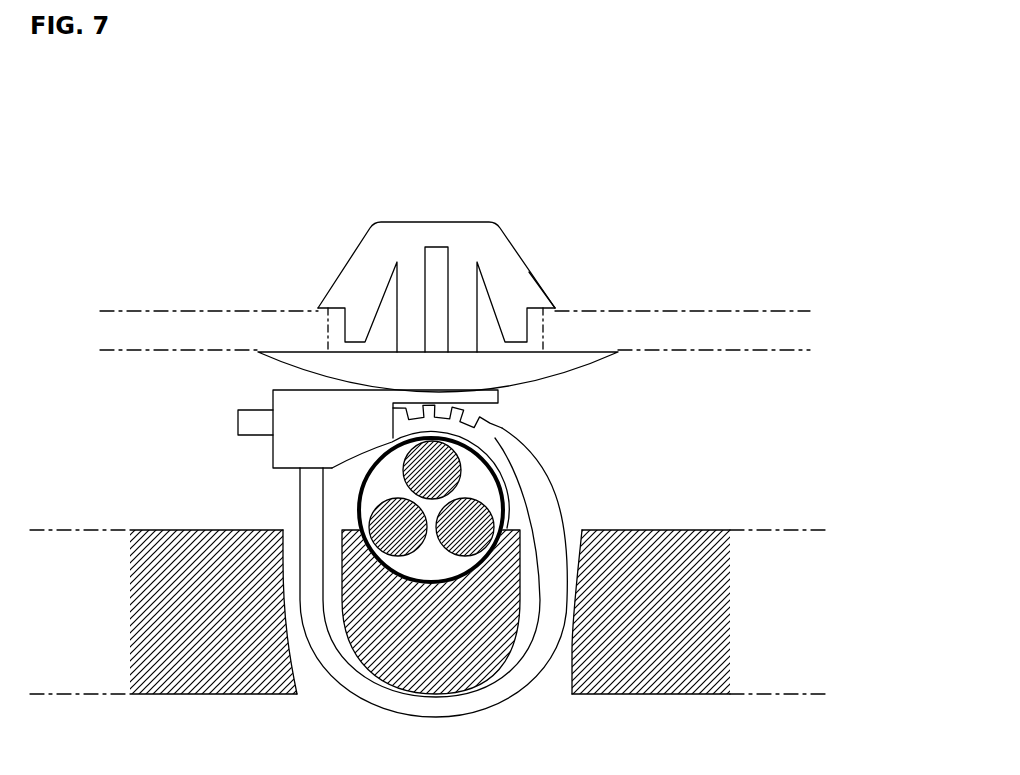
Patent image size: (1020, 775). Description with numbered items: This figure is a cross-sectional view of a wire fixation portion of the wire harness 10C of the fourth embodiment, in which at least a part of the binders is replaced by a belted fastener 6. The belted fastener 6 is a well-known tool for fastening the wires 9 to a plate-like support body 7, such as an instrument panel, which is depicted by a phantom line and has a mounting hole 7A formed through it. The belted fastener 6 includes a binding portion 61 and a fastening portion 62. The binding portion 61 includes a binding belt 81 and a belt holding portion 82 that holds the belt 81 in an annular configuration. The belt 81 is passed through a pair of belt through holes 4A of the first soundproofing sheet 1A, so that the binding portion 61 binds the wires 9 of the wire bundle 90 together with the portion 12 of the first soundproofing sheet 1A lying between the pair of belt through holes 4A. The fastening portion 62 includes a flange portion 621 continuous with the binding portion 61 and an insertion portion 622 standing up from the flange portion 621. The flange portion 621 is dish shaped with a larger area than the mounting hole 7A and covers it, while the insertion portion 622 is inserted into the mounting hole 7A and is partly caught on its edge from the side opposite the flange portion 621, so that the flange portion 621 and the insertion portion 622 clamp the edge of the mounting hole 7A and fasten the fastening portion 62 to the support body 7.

The wire harness 10C is at (233, 136).
The belted fastener 6 is at (530, 196).
The fastening portion 62 is at (564, 266).
The insertion portion 622 is at (558, 285).
The flange portion 621 is at (577, 372).
The binding portion 61 is at (595, 449).
The binding belt 81 is at (560, 507).
The belt holding portion 82 is at (273, 461).
The wire bundle 90 is at (514, 478).
The wires 9 is at (445, 506).
The portion between the pair of belt through holes 12 is at (475, 663).
The first soundproofing sheet 1A is at (650, 657).
The belt through holes 4A is at (301, 655).
The plate-like support body 7 is at (170, 311).
The mounting hole 7A is at (335, 312).